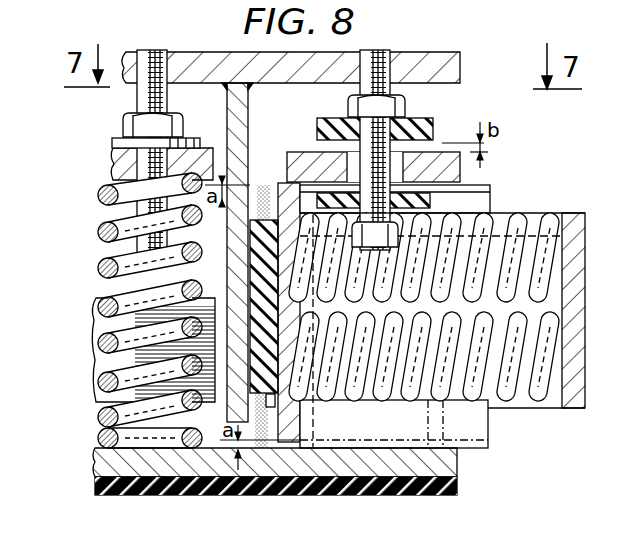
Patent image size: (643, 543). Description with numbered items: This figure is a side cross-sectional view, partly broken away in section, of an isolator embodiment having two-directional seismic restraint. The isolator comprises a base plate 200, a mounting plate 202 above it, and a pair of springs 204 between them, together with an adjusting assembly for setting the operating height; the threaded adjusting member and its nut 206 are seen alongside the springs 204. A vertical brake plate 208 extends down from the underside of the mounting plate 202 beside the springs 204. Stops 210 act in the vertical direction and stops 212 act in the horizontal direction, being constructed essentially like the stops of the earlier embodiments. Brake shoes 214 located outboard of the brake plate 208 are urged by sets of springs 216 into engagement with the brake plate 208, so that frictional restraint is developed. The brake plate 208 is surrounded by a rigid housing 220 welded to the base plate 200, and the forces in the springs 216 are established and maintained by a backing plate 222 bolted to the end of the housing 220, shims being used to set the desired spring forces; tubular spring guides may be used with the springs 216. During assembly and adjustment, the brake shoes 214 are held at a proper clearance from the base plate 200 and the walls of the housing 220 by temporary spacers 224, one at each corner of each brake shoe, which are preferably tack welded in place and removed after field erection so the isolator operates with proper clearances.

The base plate 200 is at (457, 474).
The mounting plate 202 is at (460, 62).
The springs 204 is at (200, 403).
The nut 206 is at (122, 127).
The vertical brake plates 208 is at (245, 136).
The stops 210 is at (448, 117).
The stops 212 is at (263, 450).
The brake shoes 214 is at (305, 422).
The springs 216 is at (525, 224).
The rigid housing 220 is at (470, 171).
The backing plate 222 is at (590, 226).
The temporary spacers 224 is at (490, 418).